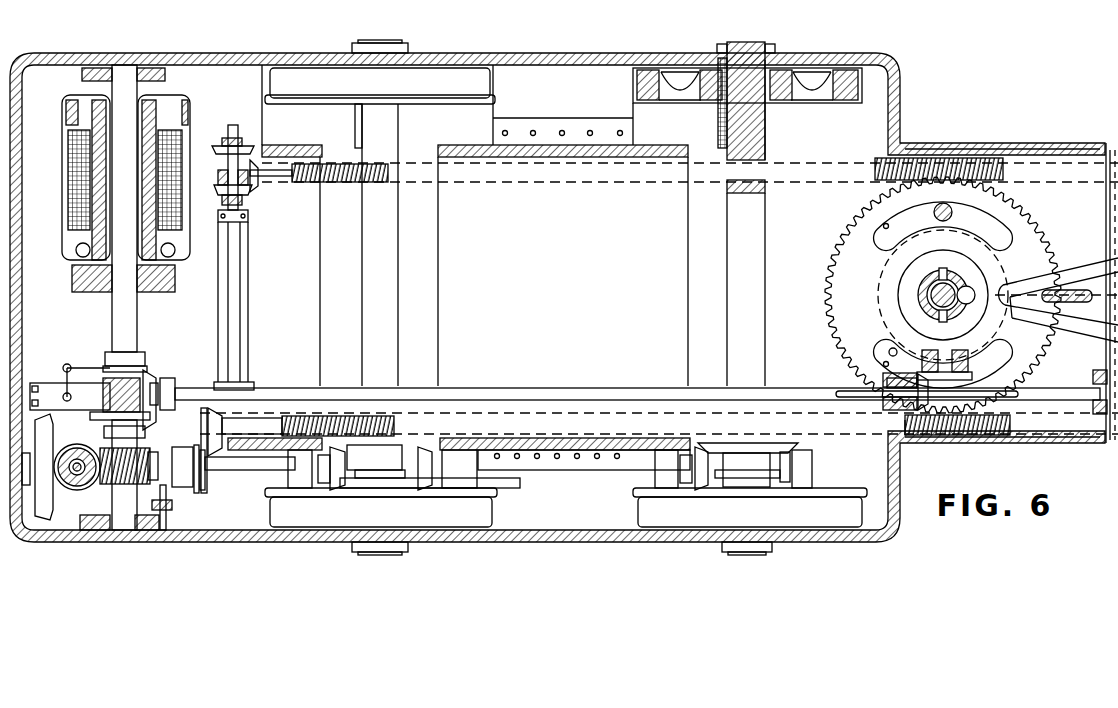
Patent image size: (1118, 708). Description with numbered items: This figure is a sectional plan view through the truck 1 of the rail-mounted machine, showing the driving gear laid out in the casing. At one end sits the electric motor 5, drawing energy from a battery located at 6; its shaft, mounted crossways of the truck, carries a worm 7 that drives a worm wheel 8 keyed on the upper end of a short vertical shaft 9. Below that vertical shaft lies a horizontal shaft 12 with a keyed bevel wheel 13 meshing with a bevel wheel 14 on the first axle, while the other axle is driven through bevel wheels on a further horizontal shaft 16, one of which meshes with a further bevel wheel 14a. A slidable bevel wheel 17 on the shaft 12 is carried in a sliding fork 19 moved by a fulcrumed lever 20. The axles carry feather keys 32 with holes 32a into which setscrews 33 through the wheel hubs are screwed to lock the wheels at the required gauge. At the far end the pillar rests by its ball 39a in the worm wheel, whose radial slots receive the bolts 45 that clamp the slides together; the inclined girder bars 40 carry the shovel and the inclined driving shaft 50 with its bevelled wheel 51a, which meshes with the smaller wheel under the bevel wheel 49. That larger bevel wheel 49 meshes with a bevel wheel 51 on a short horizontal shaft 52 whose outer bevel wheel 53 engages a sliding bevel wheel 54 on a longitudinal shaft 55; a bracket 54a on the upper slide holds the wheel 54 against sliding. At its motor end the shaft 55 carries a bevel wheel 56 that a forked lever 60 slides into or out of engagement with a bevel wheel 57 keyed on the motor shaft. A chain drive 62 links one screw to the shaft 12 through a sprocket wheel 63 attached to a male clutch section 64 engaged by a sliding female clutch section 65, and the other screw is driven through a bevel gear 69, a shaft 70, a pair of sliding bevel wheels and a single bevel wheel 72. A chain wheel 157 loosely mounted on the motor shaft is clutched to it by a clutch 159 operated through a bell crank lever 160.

The truck 1 is at (572, 542).
The electric motor 5 is at (62, 198).
The battery location 6 is at (560, 90).
The worm 7 is at (126, 532).
The worm wheel 8 is at (90, 530).
The short vertical shaft 9 is at (76, 480).
The horizontal shaft 12 is at (250, 464).
The bevel wheel 13 is at (350, 450).
The bevel wheel 14 is at (375, 482).
The bevel wheel 14a is at (778, 446).
The further horizontal shaft 16 is at (575, 462).
The bevel wheel 17 is at (48, 530).
The sliding fork 19 is at (40, 520).
The lever 20 is at (172, 520).
The feather keys 32 is at (718, 125).
The holes 32a is at (766, 125).
The setscrews 33 is at (688, 70).
The ball 39a is at (920, 284).
The inclined girder bars 40 is at (1063, 306).
The bolts 45 is at (943, 204).
The bevel wheel 49 is at (930, 296).
The inclined driving shaft 50 is at (1078, 302).
The bevel wheel 51 is at (889, 352).
The bevelled wheel 51a is at (972, 286).
The short horizontal shaft 52 is at (1040, 370).
The bevel wheel 53 is at (916, 366).
The bevel wheel 54 is at (922, 443).
The bracket 54a is at (882, 410).
The shaft 55 is at (468, 388).
The bevel wheel 56 is at (150, 372).
The bevel wheel 57 is at (104, 420).
The lever 60 is at (170, 384).
The chain drive 62 is at (205, 450).
The sprocket wheel 63 is at (200, 478).
The male clutch section 64 is at (204, 490).
The female clutch section 65 is at (182, 488).
The bevel gear 69 is at (248, 406).
The shaft 70 is at (235, 304).
The bevel wheel 72 is at (258, 178).
The chain wheel 157 is at (126, 366).
The clutch 159 is at (108, 362).
The bell crank lever 160 is at (80, 366).